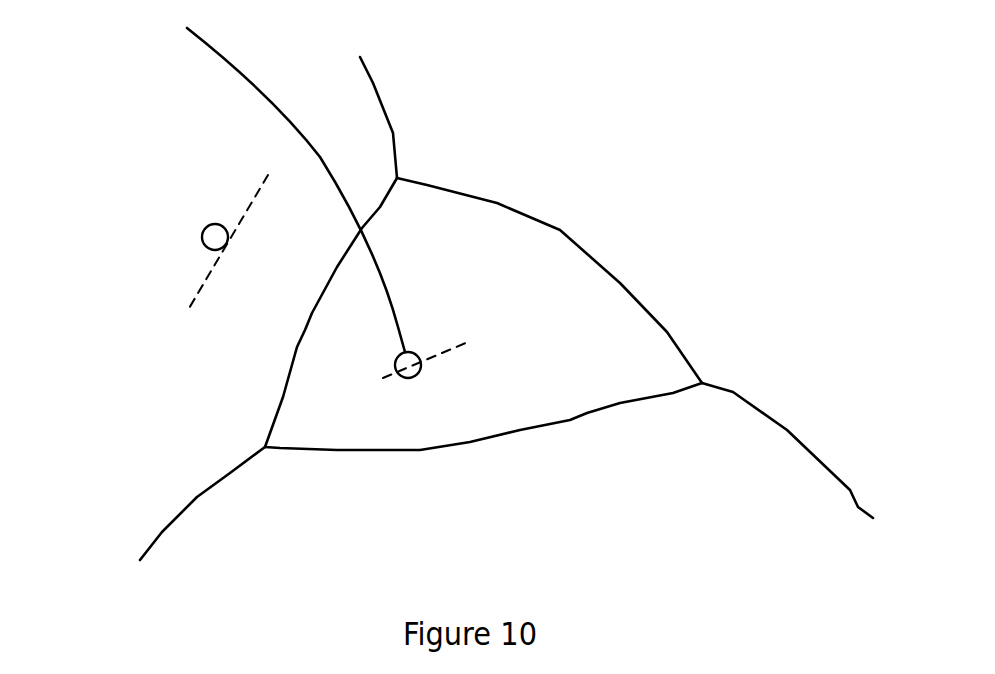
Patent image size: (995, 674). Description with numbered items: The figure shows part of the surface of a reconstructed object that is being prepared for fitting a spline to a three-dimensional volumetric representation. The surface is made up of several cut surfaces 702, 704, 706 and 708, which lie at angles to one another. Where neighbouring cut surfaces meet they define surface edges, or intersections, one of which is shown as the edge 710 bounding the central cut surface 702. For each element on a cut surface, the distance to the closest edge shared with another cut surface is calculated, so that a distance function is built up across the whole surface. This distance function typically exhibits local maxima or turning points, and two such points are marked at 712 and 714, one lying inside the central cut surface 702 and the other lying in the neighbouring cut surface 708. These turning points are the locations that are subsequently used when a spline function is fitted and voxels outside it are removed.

The cut surface 702 is at (542, 307).
The cut surface 704 is at (640, 167).
The cut surface 706 is at (602, 498).
The cut surface 708 is at (238, 390).
The edge 710 is at (623, 283).
The local maximum of distance function 712 is at (263, 179).
The local maximum of distance function 714 is at (203, 228).